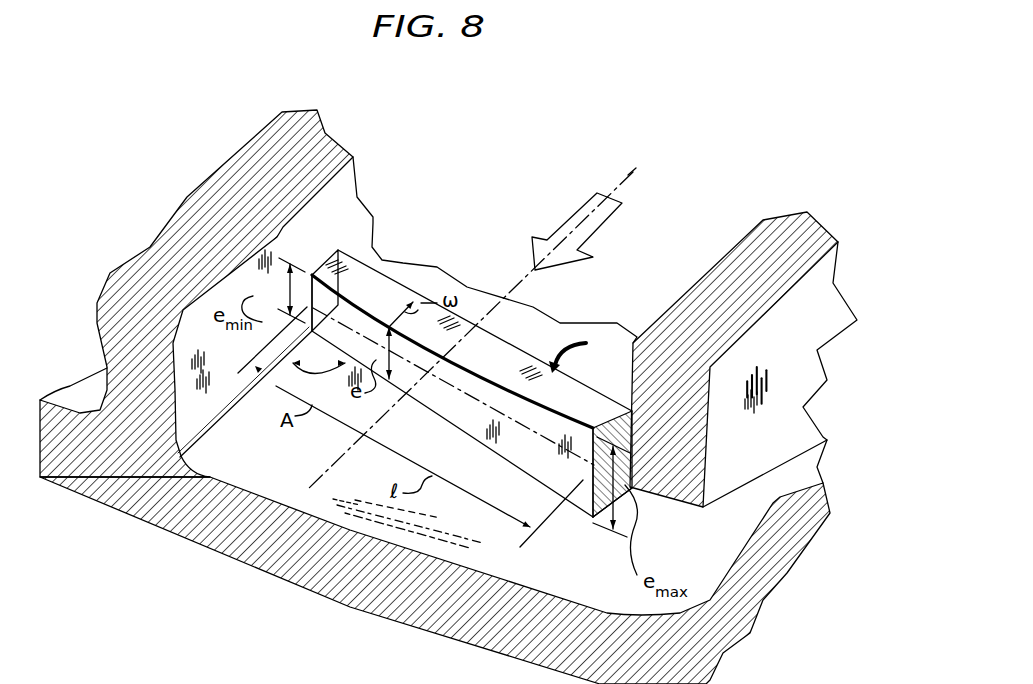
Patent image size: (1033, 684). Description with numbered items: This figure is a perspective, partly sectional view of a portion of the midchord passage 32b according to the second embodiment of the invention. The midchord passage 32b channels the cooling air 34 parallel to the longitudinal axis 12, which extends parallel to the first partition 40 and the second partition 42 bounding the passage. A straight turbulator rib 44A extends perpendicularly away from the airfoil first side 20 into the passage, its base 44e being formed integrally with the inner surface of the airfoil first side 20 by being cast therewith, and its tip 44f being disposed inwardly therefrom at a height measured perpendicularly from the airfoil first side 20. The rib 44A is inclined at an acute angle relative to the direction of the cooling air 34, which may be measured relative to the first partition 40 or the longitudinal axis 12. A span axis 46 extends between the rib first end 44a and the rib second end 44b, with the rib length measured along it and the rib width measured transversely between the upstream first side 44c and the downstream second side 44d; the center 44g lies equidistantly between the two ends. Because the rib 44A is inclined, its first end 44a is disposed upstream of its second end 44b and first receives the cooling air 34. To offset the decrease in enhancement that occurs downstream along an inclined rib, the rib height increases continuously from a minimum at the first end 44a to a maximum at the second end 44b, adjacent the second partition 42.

The longitudinal axis 12 is at (635, 178).
The airfoil first side 20 is at (345, 597).
The midchord passage 32b is at (282, 476).
The cooling air 34 is at (603, 228).
The first partition 40 is at (183, 194).
The second partition 42 is at (733, 253).
The turbulator rib 44A is at (584, 352).
The rib first end 44a is at (325, 258).
The rib second end 44b is at (635, 486).
The first side 44c is at (604, 406).
The second side 44d is at (578, 497).
The base 44e is at (470, 440).
The tip 44f is at (498, 360).
The center 44g is at (414, 380).
The span axis 46 is at (346, 320).